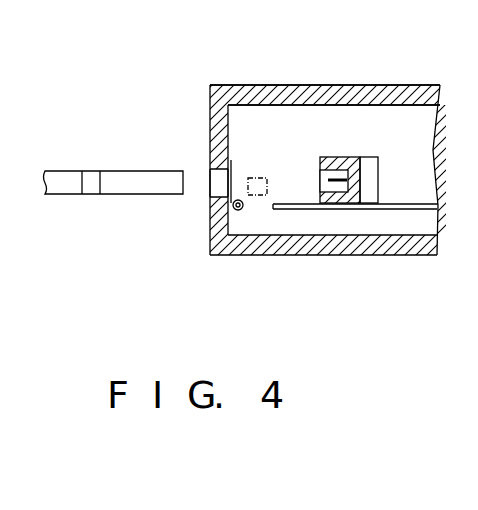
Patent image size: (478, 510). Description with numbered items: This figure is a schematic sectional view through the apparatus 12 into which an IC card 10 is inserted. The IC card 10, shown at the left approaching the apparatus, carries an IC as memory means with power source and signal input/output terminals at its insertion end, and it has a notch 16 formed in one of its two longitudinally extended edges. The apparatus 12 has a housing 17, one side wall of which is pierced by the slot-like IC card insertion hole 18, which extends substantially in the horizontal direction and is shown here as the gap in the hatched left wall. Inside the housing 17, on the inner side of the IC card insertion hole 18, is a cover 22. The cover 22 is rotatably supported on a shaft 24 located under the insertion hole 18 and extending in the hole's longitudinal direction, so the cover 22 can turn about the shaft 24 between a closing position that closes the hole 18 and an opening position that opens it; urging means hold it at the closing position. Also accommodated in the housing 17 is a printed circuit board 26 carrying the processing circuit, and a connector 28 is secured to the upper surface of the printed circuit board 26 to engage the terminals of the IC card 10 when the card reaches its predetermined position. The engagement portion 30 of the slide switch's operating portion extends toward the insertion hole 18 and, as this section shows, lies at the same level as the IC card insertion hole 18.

The IC card 10 is at (150, 171).
The apparatus 12 is at (281, 85).
The notch 16 is at (98, 195).
The housing 17 is at (229, 92).
The IC card insertion hole 18 is at (207, 184).
The cover 22 is at (238, 172).
The shaft 24 is at (242, 209).
The printed circuit board 26 is at (398, 203).
The connector 28 is at (338, 157).
The engagement portion 30 is at (266, 177).